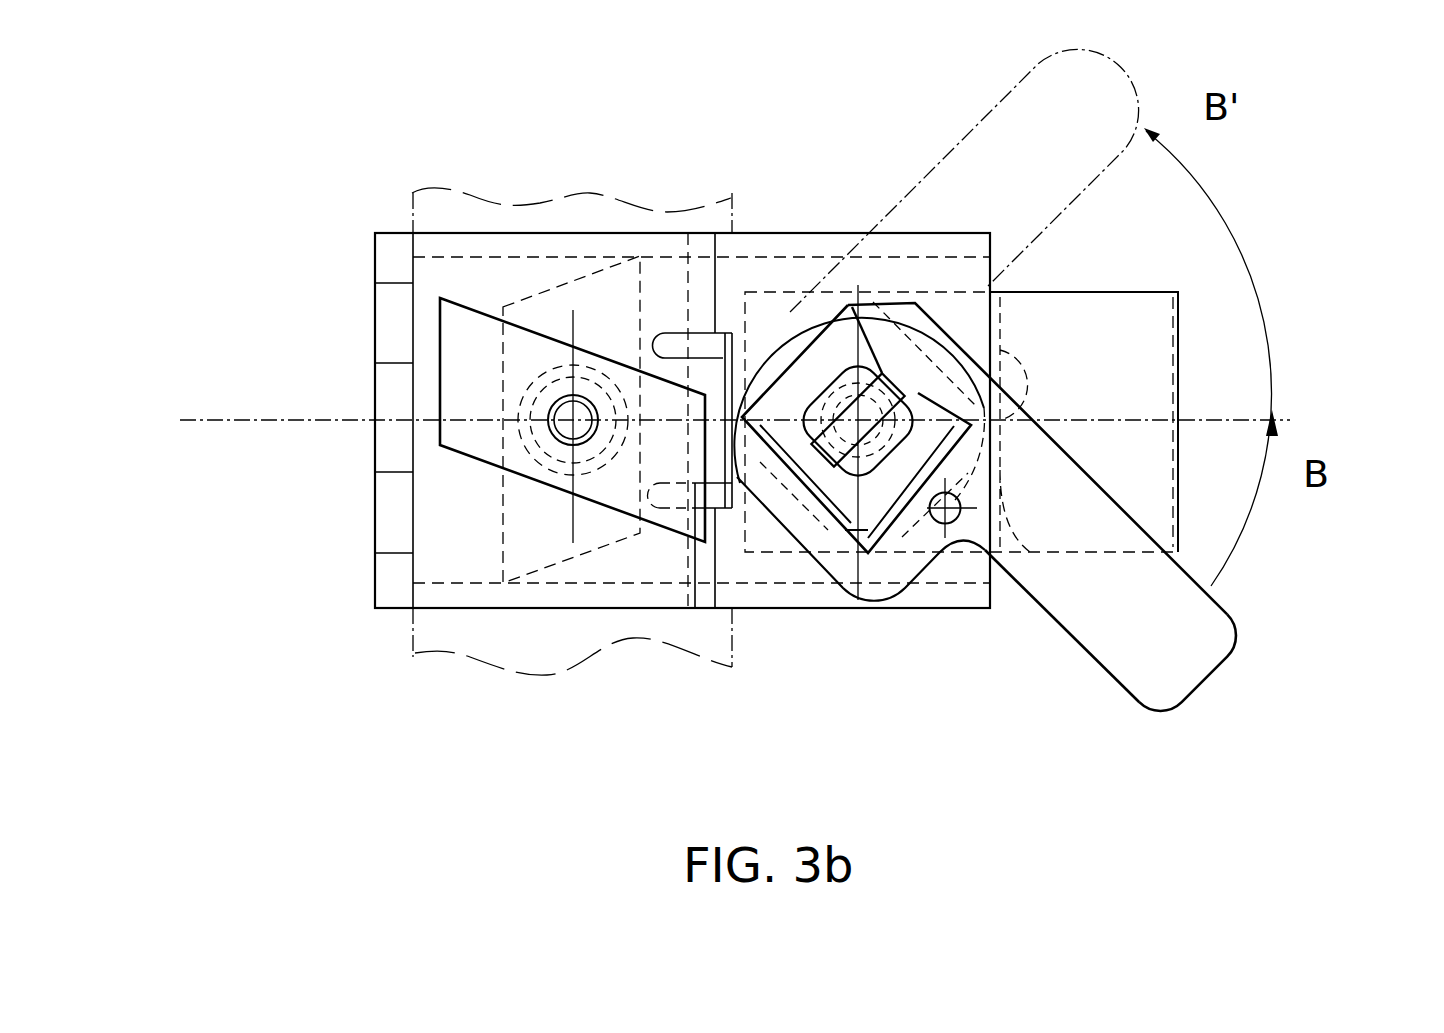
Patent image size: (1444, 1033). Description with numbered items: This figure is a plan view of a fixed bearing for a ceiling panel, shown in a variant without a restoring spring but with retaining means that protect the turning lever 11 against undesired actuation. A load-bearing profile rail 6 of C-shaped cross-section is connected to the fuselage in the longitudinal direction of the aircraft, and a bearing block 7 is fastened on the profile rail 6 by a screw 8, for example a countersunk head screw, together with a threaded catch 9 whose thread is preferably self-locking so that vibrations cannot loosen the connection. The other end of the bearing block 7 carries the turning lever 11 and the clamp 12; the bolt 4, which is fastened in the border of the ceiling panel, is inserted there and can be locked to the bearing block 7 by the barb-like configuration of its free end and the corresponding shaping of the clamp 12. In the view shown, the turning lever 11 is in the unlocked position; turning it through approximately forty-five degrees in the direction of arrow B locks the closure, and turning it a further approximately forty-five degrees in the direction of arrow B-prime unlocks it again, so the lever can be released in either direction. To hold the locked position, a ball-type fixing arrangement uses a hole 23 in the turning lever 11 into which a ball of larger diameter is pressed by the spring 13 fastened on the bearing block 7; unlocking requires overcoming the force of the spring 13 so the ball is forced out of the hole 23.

The bolt 4 is at (875, 405).
The profile rail 6 is at (472, 213).
The bearing block 7 is at (785, 597).
The screw 8 is at (562, 425).
The threaded catch 9 is at (468, 338).
The turning lever 11 is at (1162, 657).
The clamp 12 is at (810, 363).
The spring 13 is at (1134, 458).
The hole 23 is at (950, 513).